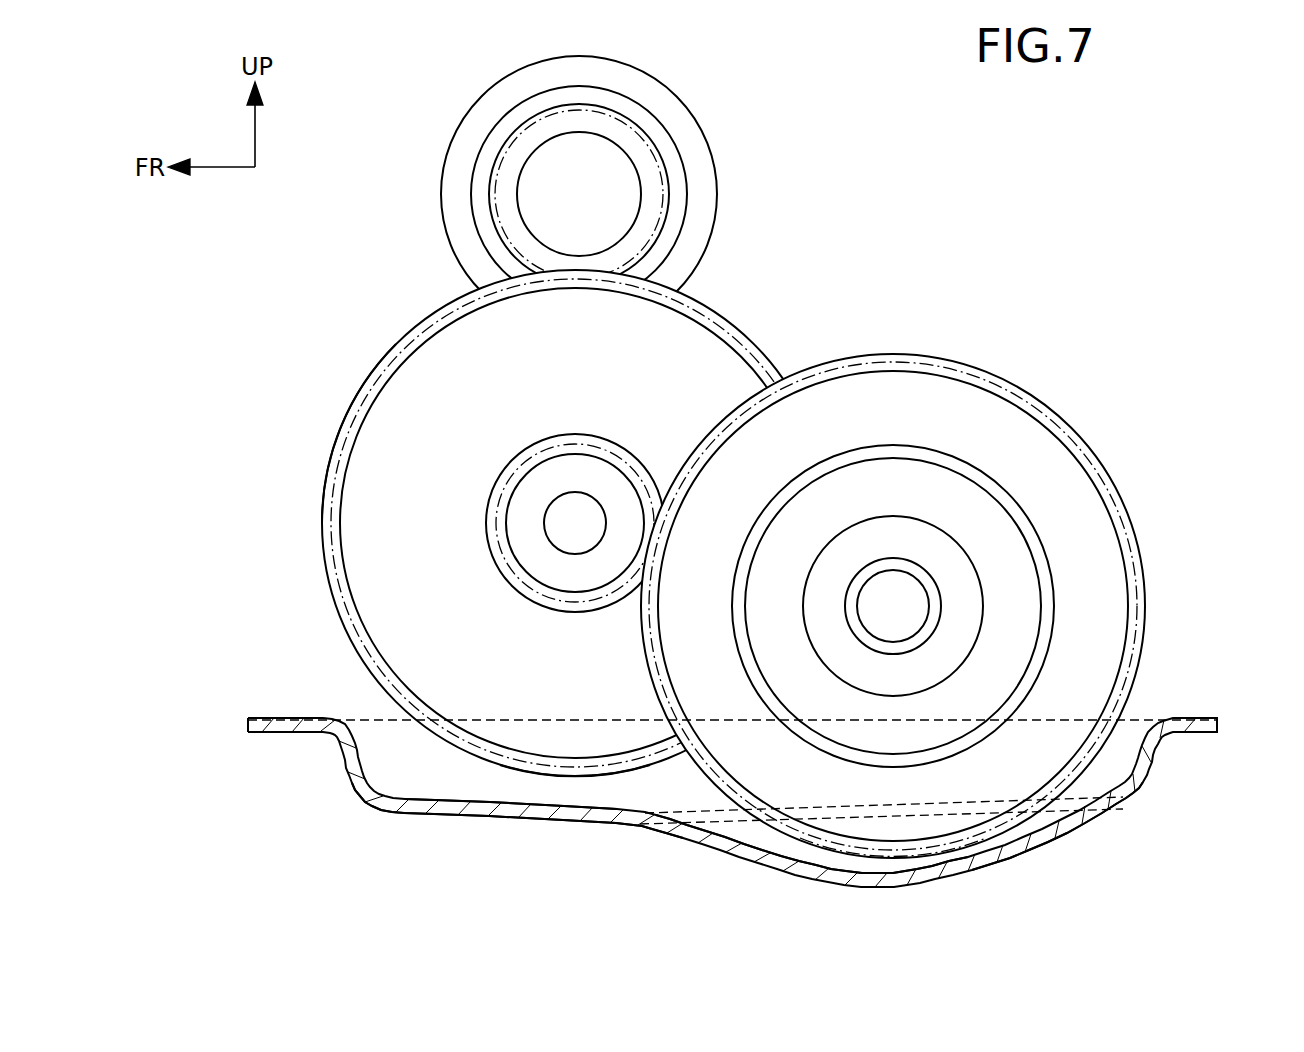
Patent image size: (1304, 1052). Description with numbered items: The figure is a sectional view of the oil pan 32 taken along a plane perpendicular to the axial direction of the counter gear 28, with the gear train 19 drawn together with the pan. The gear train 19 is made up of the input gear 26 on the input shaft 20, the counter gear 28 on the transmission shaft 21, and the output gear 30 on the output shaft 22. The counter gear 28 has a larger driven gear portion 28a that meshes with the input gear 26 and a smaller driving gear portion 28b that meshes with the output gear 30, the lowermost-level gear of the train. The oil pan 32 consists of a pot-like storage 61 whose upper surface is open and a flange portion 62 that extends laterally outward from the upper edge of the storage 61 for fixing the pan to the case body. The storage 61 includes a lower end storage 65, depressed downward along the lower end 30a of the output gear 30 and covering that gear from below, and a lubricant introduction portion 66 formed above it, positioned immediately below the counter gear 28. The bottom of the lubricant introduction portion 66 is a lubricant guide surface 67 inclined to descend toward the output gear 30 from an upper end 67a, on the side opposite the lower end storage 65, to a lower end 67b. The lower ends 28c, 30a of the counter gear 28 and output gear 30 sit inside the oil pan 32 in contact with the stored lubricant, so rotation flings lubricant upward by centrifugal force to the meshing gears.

The gear train 19 is at (777, 170).
The input shaft 20 is at (633, 108).
The transmission shaft 21 is at (407, 330).
The output shaft 22 is at (1092, 448).
The input gear 26 is at (662, 222).
The counter gear 28 is at (745, 328).
The driven gear portion 28a is at (353, 395).
The driving gear portion 28b is at (492, 497).
The lower end of the counter gear 28c is at (578, 778).
The output gear 30 is at (922, 355).
The lower end of the output gear 30a is at (900, 858).
The oil pan 32 is at (1070, 858).
The storage 61 is at (723, 853).
The flange portion 62 is at (1192, 717).
The lower end storage 65 is at (968, 883).
The lubricant introduction portion 66 is at (517, 822).
The lubricant guide surface 67 is at (547, 817).
The upper end of the lubricant guide surface 67a is at (382, 810).
The lower end of the lubricant guide surface 67b is at (662, 825).